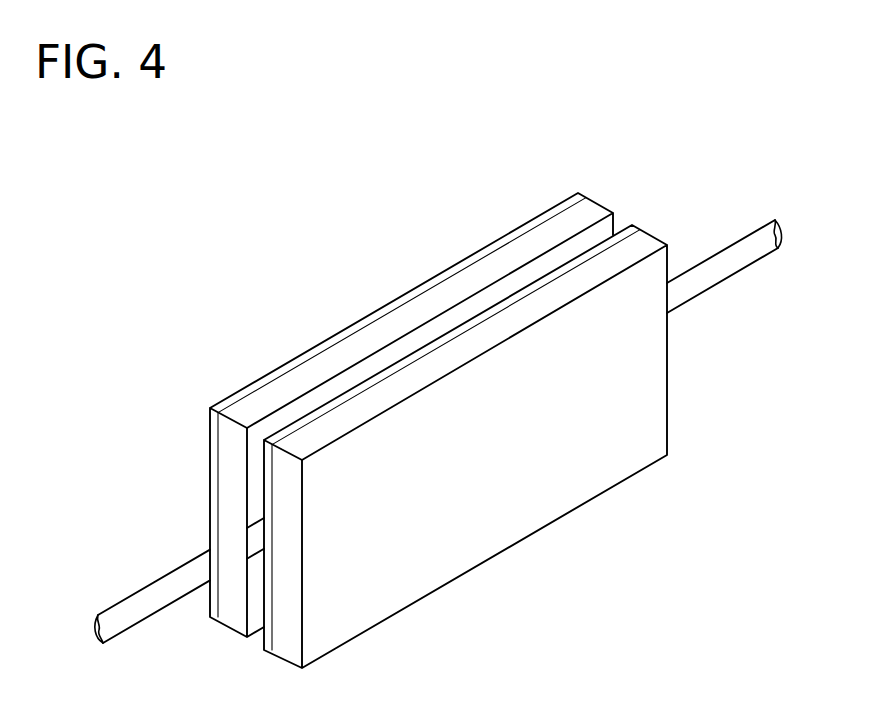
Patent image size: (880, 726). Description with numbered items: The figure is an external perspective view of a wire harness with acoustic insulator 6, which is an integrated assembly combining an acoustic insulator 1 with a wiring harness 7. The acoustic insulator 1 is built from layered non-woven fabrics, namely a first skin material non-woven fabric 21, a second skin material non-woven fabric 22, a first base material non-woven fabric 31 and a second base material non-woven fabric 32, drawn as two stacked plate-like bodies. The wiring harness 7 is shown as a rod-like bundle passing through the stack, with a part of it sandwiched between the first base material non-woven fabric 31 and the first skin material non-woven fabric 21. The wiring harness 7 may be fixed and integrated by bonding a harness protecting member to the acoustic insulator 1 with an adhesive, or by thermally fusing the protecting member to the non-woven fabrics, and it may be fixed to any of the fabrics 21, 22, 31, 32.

The acoustic insulator 1 is at (212, 282).
The first skin material non-woven fabric 21 is at (300, 420).
The second skin material non-woven fabric 22 is at (232, 397).
The first base material non-woven fabric 31 is at (265, 407).
The second base material non-woven fabric 32 is at (337, 423).
The wire harness with acoustic insulator 6 is at (497, 233).
The wiring harness 7 is at (140, 590).